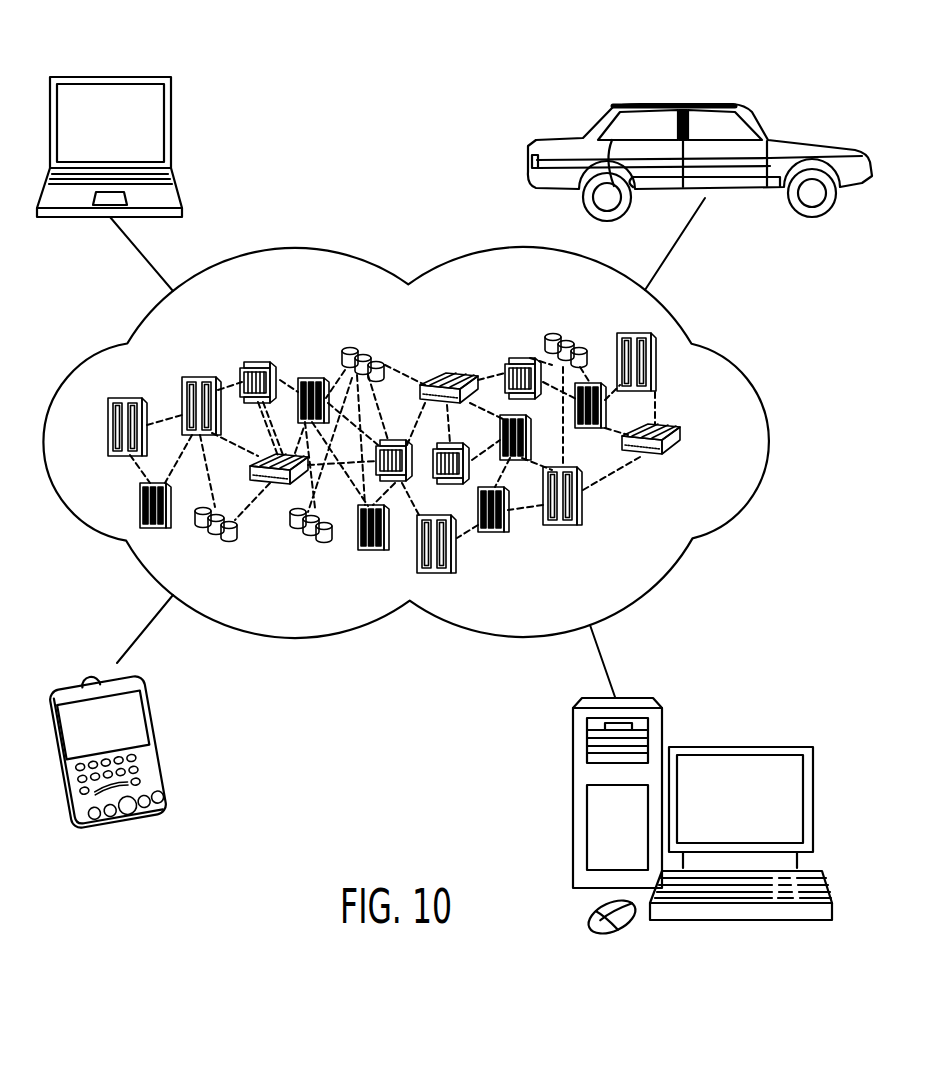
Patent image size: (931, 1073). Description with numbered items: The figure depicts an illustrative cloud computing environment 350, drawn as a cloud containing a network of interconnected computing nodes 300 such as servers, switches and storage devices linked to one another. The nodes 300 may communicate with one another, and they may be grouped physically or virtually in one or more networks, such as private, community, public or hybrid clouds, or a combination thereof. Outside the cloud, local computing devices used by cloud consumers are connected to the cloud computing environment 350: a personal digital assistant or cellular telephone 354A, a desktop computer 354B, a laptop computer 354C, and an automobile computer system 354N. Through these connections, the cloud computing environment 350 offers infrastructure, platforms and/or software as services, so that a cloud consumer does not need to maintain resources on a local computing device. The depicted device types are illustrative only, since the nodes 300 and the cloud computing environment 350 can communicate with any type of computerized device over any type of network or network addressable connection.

The cloud computing node 300 is at (700, 445).
The cloud computing environment 350 is at (755, 349).
The personal digital assistant or cellular telephone 354A is at (92, 682).
The desktop computer 354B is at (740, 747).
The laptop computer 354C is at (110, 76).
The automobile computer system 354N is at (677, 104).